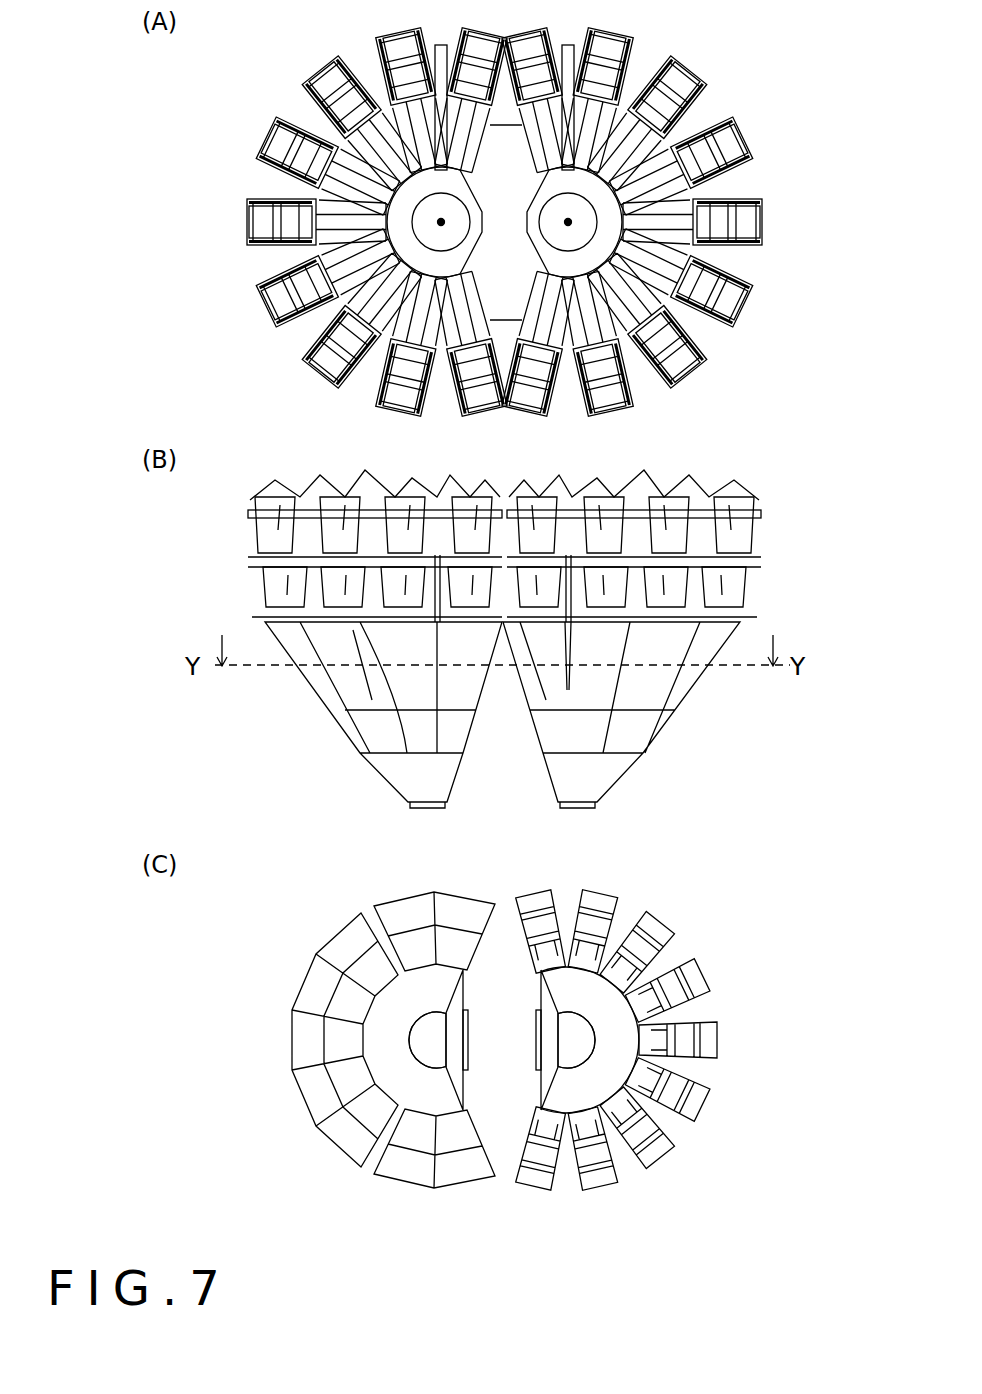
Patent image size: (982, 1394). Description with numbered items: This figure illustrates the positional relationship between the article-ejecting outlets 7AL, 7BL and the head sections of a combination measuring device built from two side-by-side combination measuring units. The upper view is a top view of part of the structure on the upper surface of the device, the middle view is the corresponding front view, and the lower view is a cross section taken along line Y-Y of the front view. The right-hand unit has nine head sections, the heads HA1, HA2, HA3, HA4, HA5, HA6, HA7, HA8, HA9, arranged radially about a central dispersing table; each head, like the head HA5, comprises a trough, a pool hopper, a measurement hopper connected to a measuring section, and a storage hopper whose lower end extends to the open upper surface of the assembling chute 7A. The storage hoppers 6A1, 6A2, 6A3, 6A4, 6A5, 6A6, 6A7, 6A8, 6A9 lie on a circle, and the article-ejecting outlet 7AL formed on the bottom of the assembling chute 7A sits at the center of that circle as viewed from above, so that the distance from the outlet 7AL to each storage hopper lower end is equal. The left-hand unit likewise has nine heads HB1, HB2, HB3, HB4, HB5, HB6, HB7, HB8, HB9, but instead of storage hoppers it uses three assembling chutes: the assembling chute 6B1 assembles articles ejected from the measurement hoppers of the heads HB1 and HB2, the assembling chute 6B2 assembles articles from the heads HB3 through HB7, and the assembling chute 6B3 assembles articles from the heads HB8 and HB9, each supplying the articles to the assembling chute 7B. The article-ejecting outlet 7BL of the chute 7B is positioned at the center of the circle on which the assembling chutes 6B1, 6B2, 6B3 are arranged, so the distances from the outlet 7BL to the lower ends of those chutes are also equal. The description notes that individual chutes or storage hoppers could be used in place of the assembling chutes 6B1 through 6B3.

The head section HB1 is at (469, 90).
The head section HB2 is at (414, 90).
The head section HB3 is at (348, 116).
The head section HB4 is at (304, 168).
The head section HB5 is at (287, 222).
The head section HB6 is at (300, 276).
The head section HB7 is at (343, 324).
The head section HB8 is at (401, 356).
The head section HB9 is at (469, 355).
The head section HA1 is at (540, 355).
The head section HA2 is at (608, 356).
The head section HA3 is at (665, 326).
The head section HA4 is at (707, 276).
The head section HA5 is at (722, 222).
The head section HA6 is at (705, 168).
The head section HA7 is at (665, 119).
The head section HA8 is at (607, 90).
The head section HA9 is at (540, 90).
The assembling chute 7A is at (610, 772).
The assembling chute 7B is at (405, 775).
The article-ejecting outlet 7AL is at (560, 1044).
The article-ejecting outlet 7BL is at (445, 1044).
The storage hopper 6A1 is at (535, 1187).
The storage hopper 6A2 is at (600, 1187).
The storage hopper 6A3 is at (662, 1160).
The storage hopper 6A4 is at (706, 1100).
The storage hopper 6A5 is at (722, 1038).
The storage hopper 6A6 is at (710, 982).
The storage hopper 6A7 is at (668, 930).
The storage hopper 6A8 is at (605, 896).
The storage hopper 6A9 is at (540, 900).
The assembling chute 6B1 is at (410, 894).
The assembling chute 6B2 is at (291, 1020).
The assembling chute 6B3 is at (425, 1188).